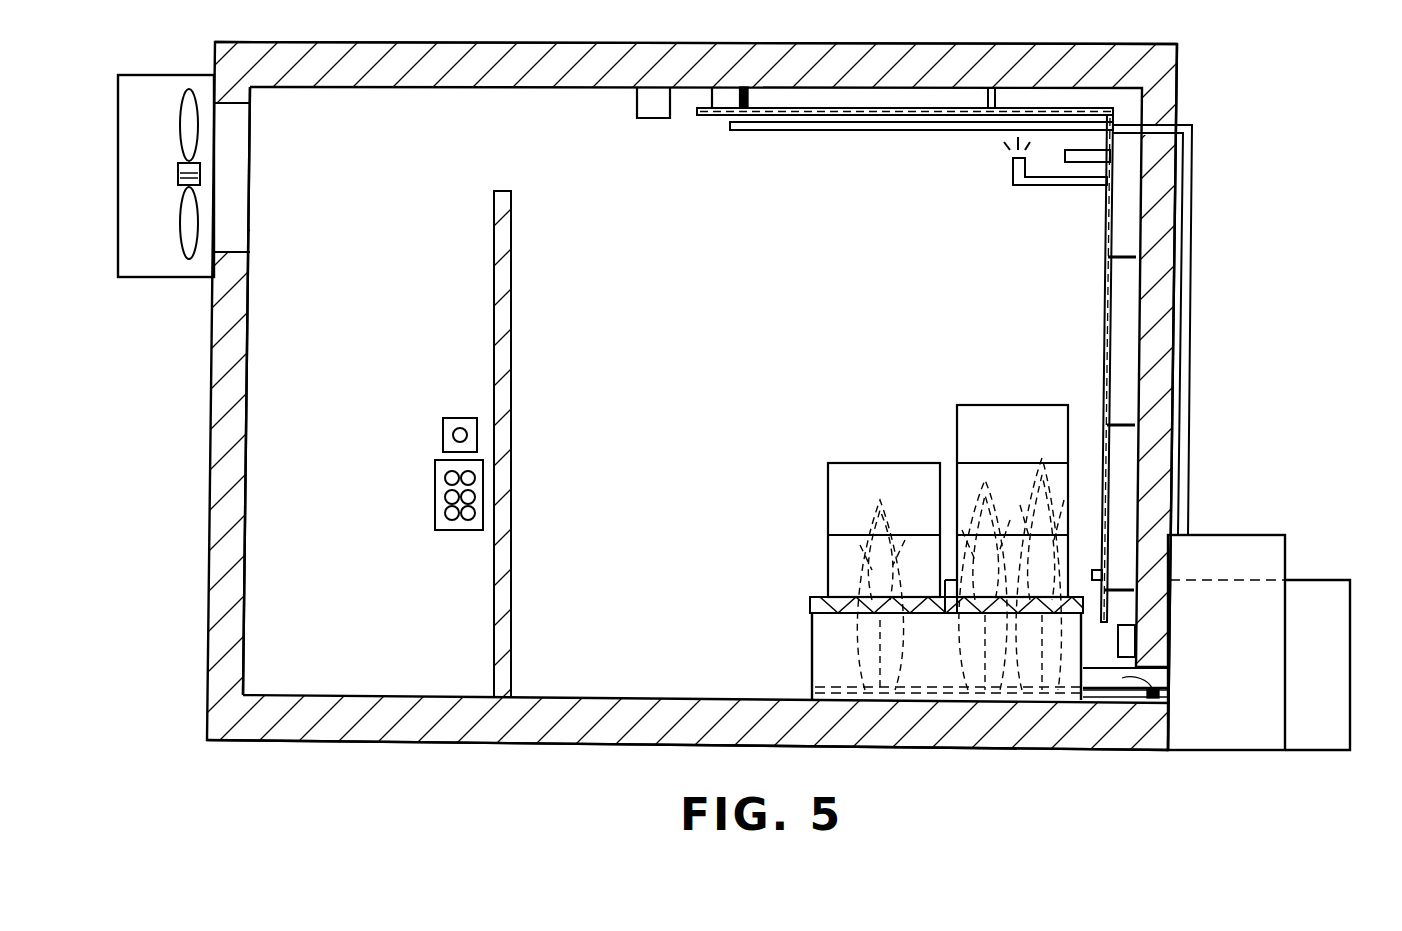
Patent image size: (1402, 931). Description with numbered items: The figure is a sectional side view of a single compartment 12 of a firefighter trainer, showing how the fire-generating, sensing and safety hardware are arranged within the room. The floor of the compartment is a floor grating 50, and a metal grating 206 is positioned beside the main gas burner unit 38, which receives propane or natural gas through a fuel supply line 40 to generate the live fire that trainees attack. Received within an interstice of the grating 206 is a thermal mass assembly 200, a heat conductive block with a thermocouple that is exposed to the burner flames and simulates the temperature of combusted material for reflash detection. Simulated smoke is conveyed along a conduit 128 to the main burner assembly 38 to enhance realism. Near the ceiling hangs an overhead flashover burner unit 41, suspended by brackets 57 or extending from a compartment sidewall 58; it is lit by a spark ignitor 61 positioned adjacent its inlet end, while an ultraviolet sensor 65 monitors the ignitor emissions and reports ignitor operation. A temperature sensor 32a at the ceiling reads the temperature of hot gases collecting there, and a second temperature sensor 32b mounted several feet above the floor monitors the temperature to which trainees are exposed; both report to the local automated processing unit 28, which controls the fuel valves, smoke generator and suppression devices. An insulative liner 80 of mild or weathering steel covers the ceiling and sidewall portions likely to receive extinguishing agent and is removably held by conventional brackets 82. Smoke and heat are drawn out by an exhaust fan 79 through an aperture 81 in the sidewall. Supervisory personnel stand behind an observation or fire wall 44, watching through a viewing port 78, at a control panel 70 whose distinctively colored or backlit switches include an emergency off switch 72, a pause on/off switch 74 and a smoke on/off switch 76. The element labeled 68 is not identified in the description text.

The compartment 12 is at (1212, 118).
The local automated processing unit 28 is at (1310, 555).
The temperature sensor 32a is at (648, 100).
The temperature sensor 32b is at (1094, 570).
The main gas burner unit 38 is at (830, 687).
The fuel supply line 40 is at (1108, 694).
The overhead flashover burner unit 41 is at (845, 130).
The fire wall 44 is at (497, 380).
The floor grating 50 is at (637, 735).
The bracket 57 is at (965, 112).
The compartment sidewall 58 is at (1157, 365).
The spark ignitor 61 is at (1014, 170).
The ultraviolet sensor 65 is at (1100, 156).
The heater unit 68 is at (423, 464).
The control panel 70 is at (362, 468).
The emergency off switch 72 is at (457, 432).
The pause on/off switch 74 is at (450, 504).
The smoke on/off switch 76 is at (468, 530).
The viewing port 78 is at (503, 270).
The exhaust fan 79 is at (155, 125).
The insulative liner 80 is at (718, 100).
The aperture 81 is at (240, 173).
The bracket 82 is at (747, 100).
The conduit 128 is at (1152, 698).
The thermal mass assembly 200 is at (948, 556).
The metal grating 206 is at (808, 601).